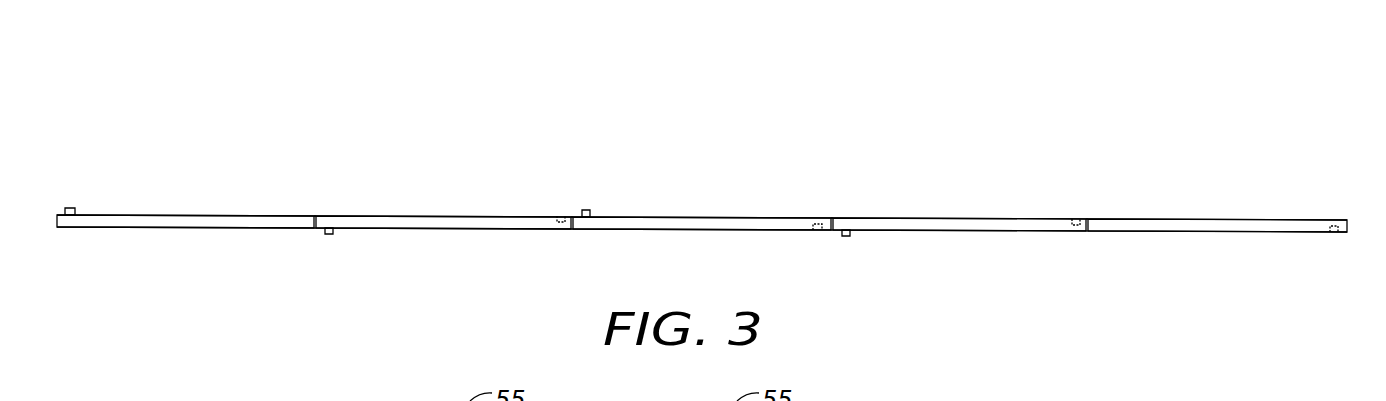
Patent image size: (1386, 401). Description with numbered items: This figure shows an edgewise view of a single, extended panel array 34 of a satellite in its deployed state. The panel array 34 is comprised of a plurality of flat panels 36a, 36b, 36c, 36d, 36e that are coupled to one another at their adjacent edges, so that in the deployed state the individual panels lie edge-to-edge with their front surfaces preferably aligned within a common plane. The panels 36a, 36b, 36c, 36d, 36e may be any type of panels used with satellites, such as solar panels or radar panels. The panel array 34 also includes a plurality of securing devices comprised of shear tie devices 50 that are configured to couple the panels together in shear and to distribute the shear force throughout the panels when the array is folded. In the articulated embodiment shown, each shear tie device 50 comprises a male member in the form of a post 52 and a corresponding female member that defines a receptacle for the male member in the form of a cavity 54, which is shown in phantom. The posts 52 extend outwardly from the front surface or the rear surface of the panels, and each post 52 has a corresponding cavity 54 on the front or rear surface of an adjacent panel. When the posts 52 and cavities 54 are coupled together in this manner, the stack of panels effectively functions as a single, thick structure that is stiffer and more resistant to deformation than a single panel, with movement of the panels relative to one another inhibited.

The panel array 34 is at (870, 100).
The panel 36a is at (1230, 218).
The panel 36b is at (960, 220).
The panel 36c is at (672, 230).
The panel 36d is at (403, 218).
The panel 36e is at (200, 222).
The shear tie device 50 is at (88, 135).
The post 52 is at (72, 207).
The cavity 54 is at (558, 215).